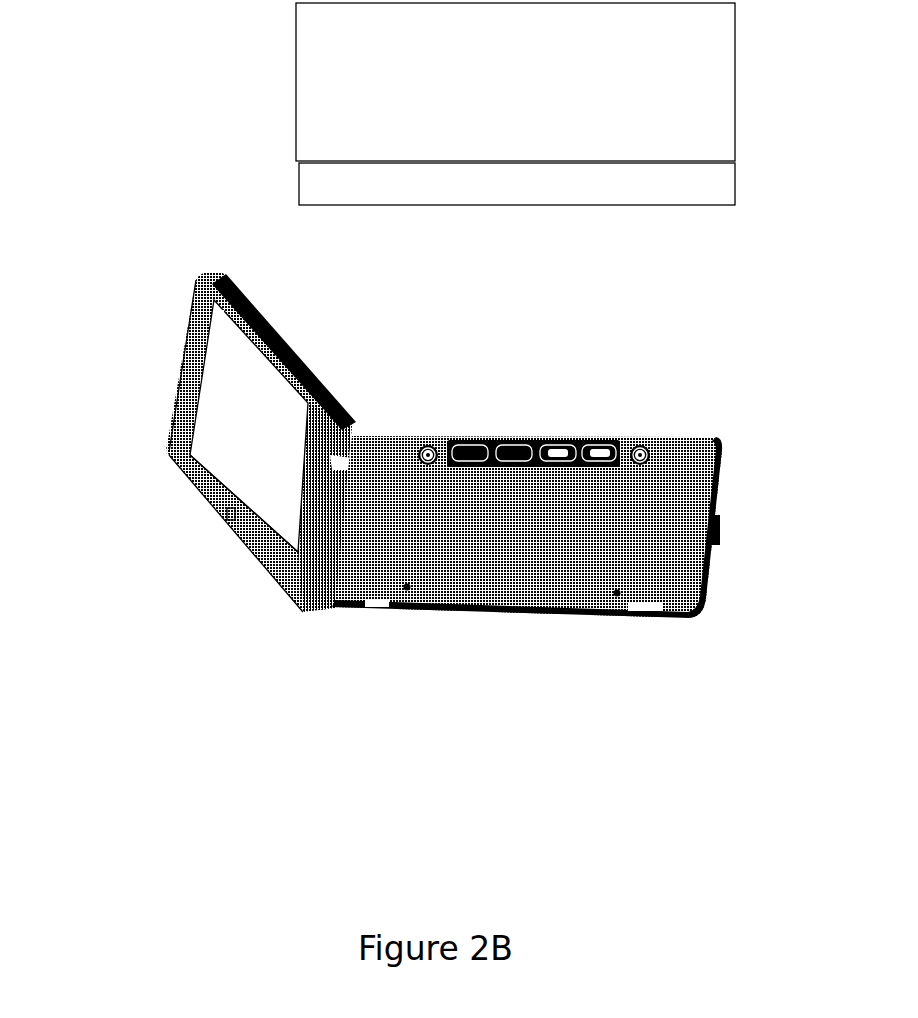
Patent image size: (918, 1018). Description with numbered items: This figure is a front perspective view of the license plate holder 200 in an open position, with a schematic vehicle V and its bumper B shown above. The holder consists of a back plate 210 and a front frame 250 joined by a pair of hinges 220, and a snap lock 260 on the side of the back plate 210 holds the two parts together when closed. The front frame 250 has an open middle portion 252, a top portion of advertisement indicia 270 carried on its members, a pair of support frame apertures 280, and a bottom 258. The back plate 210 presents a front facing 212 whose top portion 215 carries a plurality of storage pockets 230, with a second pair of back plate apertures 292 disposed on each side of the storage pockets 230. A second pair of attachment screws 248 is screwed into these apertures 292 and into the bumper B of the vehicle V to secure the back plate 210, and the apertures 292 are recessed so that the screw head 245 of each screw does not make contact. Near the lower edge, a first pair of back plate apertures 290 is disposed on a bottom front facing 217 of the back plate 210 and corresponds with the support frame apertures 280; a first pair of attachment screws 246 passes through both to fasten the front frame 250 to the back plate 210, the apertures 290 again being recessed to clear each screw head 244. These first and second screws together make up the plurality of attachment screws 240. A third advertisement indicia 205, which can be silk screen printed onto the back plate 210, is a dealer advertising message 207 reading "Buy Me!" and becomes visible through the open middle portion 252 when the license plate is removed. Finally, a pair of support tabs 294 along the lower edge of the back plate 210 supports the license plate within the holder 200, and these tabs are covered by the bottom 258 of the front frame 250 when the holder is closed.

The license plate holder 200 is at (247, 183).
The vehicle V is at (630, 91).
The bumper B is at (660, 179).
The front frame 250 is at (178, 575).
The top portion 215 is at (290, 353).
The open middle portion 252 is at (245, 437).
The pair of support frame apertures 280 is at (187, 475).
The bottom 258 is at (207, 508).
The plurality of advertisement indicia 270 is at (240, 352).
The pair of hinges 220 is at (340, 563).
The back plate 210 is at (682, 452).
The front facing 212 is at (715, 452).
The pair of support tabs 294 is at (360, 615).
The bottom front facing 217 is at (520, 608).
The plurality of storage pockets 230 is at (527, 442).
The plurality of attachment screws 240 is at (573, 433).
The first pair of attachment screws 246 is at (612, 437).
The screw head 244 is at (592, 465).
The second pair of back plate apertures 292 is at (427, 443).
The screw head 245 is at (422, 450).
The second pair of attachment screws 248 is at (427, 458).
The snap lock 260 is at (717, 527).
The first pair of back plate apertures 290 is at (617, 593).
The third advertisement indicia 205 is at (633, 542).
The dealer advertising message 207 is at (633, 542).